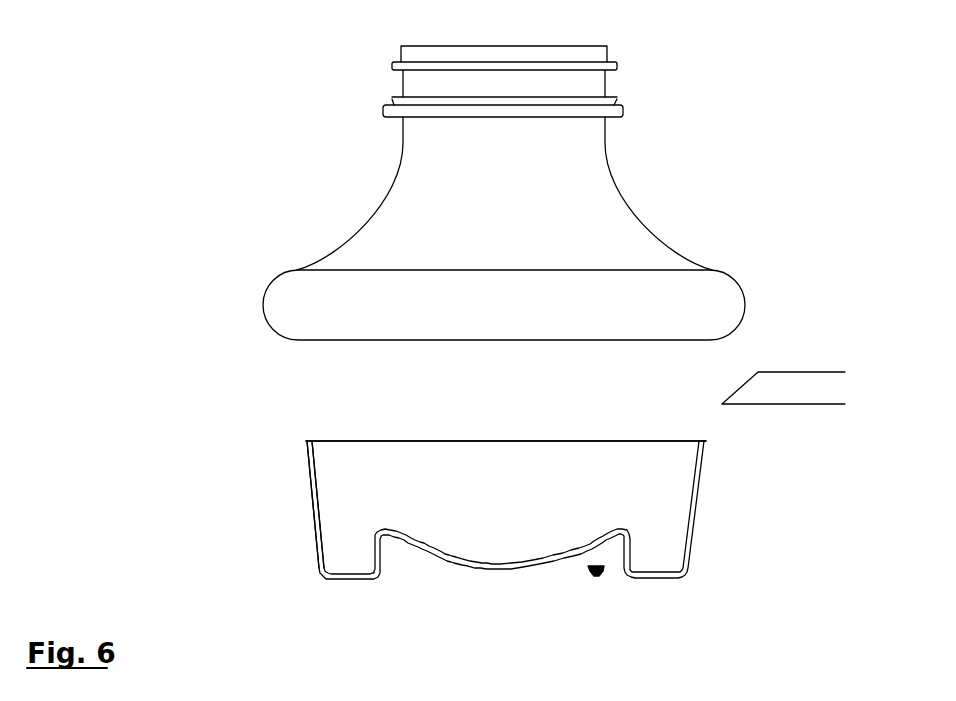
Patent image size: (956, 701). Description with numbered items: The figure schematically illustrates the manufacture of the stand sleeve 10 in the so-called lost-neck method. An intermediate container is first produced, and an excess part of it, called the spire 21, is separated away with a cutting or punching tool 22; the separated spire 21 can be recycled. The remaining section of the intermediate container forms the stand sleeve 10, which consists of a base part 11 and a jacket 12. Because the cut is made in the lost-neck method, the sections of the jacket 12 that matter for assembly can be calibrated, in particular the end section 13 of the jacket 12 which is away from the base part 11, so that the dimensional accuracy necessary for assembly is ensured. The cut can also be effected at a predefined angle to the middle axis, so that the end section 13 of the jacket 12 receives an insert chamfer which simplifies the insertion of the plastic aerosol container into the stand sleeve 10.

The stand sleeve 10 is at (703, 495).
The base part 11 is at (604, 573).
The jacket 12 is at (312, 521).
The end section 13 is at (307, 441).
The spire 21 is at (605, 181).
The cutting or punching tool 22 is at (780, 385).